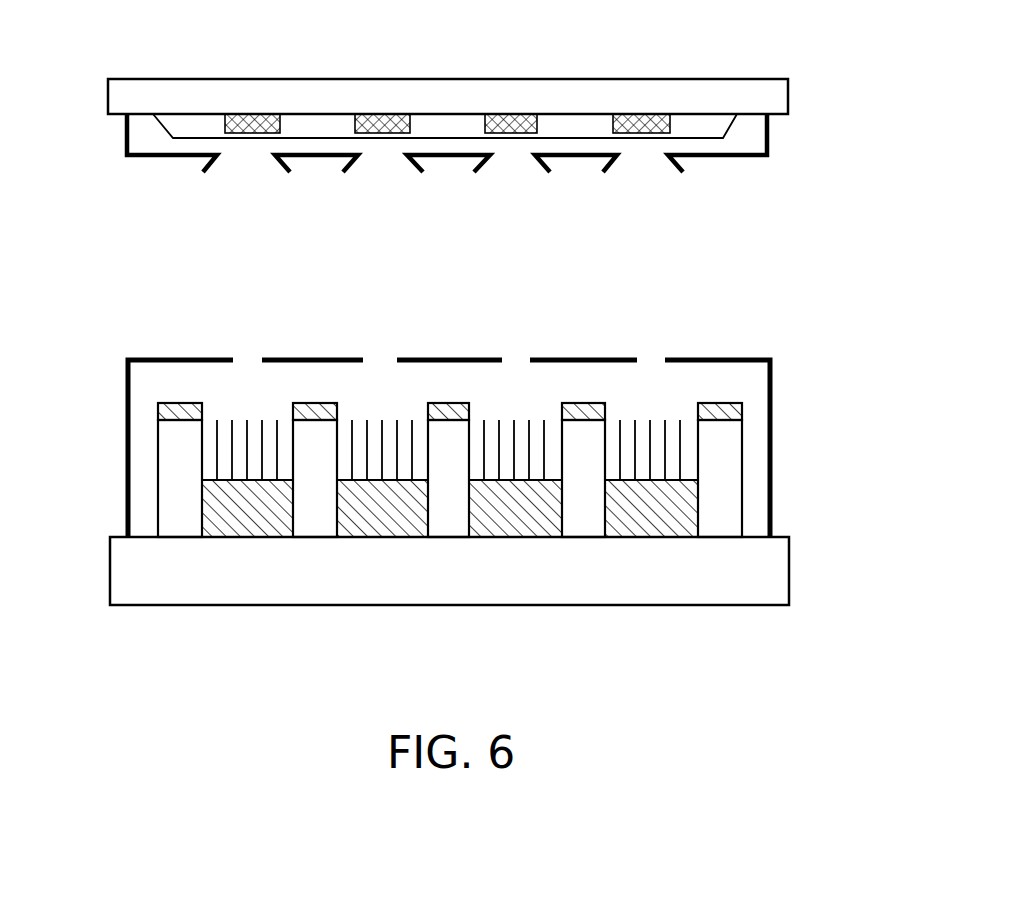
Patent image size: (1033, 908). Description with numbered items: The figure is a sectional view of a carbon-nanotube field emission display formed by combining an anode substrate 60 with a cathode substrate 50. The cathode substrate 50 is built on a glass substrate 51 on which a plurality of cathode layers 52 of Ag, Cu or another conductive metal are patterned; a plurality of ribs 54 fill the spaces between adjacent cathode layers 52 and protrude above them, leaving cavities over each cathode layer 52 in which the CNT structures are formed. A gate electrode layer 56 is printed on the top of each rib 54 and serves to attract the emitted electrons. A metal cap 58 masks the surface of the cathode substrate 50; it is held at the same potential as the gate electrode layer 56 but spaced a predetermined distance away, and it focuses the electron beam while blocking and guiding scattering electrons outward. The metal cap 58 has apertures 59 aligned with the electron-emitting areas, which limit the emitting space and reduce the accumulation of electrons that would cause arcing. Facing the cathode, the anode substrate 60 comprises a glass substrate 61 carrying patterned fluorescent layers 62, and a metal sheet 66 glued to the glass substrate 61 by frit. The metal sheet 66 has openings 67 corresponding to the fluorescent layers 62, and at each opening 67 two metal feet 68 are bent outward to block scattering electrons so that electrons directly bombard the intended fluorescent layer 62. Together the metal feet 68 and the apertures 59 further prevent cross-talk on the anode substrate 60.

The cathode substrate 50 is at (476, 473).
The glass substrate 51 is at (770, 570).
The cathode layer 52 is at (700, 500).
The rib 54 is at (318, 128).
The gate electrode layer 56 is at (742, 405).
The metal cap 58 is at (128, 412).
The aperture 59 is at (248, 368).
The anode substrate 60 is at (453, 271).
The glass substrate 61 is at (558, 90).
The fluorescent layer 62 is at (255, 114).
The metal sheet 66 is at (127, 138).
The opening 67 is at (247, 162).
The metal foot 68 is at (205, 165).